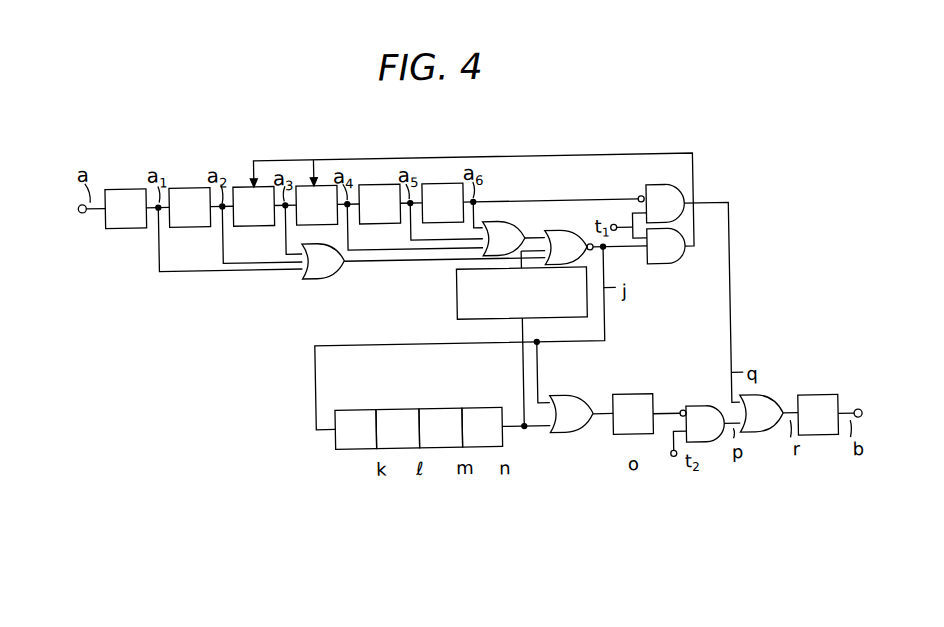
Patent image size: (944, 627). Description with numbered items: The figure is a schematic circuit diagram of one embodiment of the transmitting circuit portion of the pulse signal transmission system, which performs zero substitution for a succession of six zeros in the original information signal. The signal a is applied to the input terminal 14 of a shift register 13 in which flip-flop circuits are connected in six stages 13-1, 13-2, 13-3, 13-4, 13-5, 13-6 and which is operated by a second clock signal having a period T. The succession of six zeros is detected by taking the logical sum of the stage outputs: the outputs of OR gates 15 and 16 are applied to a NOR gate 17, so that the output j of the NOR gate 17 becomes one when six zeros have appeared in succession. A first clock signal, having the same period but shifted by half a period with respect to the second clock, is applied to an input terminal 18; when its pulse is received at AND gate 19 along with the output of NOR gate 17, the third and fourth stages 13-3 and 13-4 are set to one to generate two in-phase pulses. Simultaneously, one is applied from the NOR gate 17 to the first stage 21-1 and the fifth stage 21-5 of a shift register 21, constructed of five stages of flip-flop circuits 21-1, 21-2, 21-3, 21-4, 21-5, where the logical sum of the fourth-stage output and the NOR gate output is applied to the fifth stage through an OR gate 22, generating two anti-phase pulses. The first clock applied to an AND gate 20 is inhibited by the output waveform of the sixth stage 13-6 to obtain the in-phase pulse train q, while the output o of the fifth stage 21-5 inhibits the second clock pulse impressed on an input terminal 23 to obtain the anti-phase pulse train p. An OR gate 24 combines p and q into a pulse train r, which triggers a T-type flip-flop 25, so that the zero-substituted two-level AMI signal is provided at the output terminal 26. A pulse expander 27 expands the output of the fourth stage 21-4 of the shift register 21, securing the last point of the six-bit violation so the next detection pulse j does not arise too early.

The shift register 13 is at (295, 126).
The flip-flop circuit 13-1 is at (127, 224).
The flip-flop circuit 13-2 is at (193, 222).
The flip-flop circuit 13-3 is at (254, 224).
The flip-flop circuit 13-4 is at (310, 224).
The flip-flop circuit 13-5 is at (378, 222).
The flip-flop circuit 13-6 is at (442, 222).
The input terminal 14 is at (84, 207).
The OR gate 15 is at (312, 276).
The OR gate 16 is at (505, 221).
The NOR gate 17 is at (556, 231).
The input terminal 18 is at (614, 214).
The AND gate 19 is at (665, 270).
The AND gate 20 is at (665, 187).
The shift register 21 is at (653, 481).
The flip-flop circuit 21-1 is at (354, 407).
The flip-flop circuit 21-2 is at (391, 407).
The flip-flop circuit 21-3 is at (438, 407).
The flip-flop circuit 21-4 is at (480, 407).
The flip-flop circuit 21-5 is at (631, 397).
The OR gate 22 is at (567, 397).
The input terminal 23 is at (674, 461).
The OR gate 24 is at (758, 402).
The T-type flip-flop 25 is at (815, 401).
The output terminal 26 is at (856, 416).
The pulse expander 27 is at (455, 300).